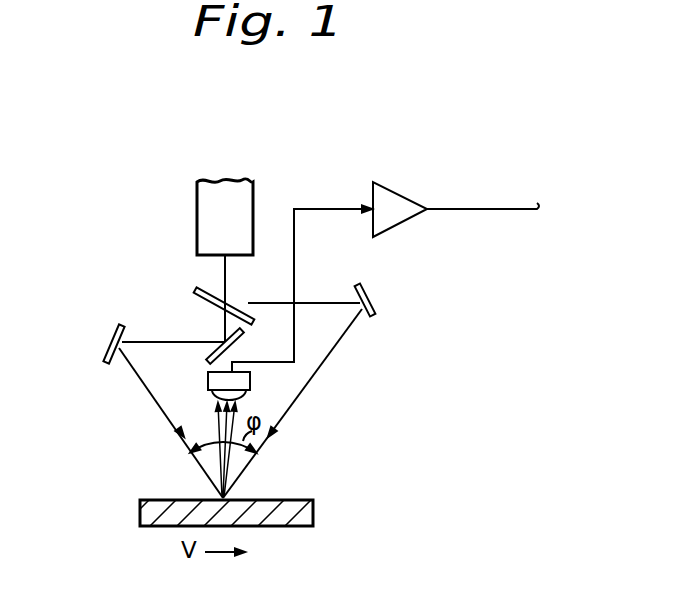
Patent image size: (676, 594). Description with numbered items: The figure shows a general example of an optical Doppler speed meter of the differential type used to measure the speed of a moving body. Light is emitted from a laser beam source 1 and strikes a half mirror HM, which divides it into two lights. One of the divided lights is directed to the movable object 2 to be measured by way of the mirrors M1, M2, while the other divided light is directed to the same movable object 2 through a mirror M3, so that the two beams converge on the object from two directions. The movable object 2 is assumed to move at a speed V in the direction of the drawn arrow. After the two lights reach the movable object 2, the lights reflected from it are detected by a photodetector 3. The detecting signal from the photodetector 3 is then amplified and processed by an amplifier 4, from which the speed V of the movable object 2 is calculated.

The laser beam source 1 is at (245, 192).
The movable object 2 is at (150, 500).
The photodetector 3 is at (209, 380).
The amplifier 4 is at (400, 217).
The half mirror HM is at (196, 292).
The mirror M1 is at (244, 344).
The mirror M2 is at (108, 345).
The mirror M3 is at (375, 300).